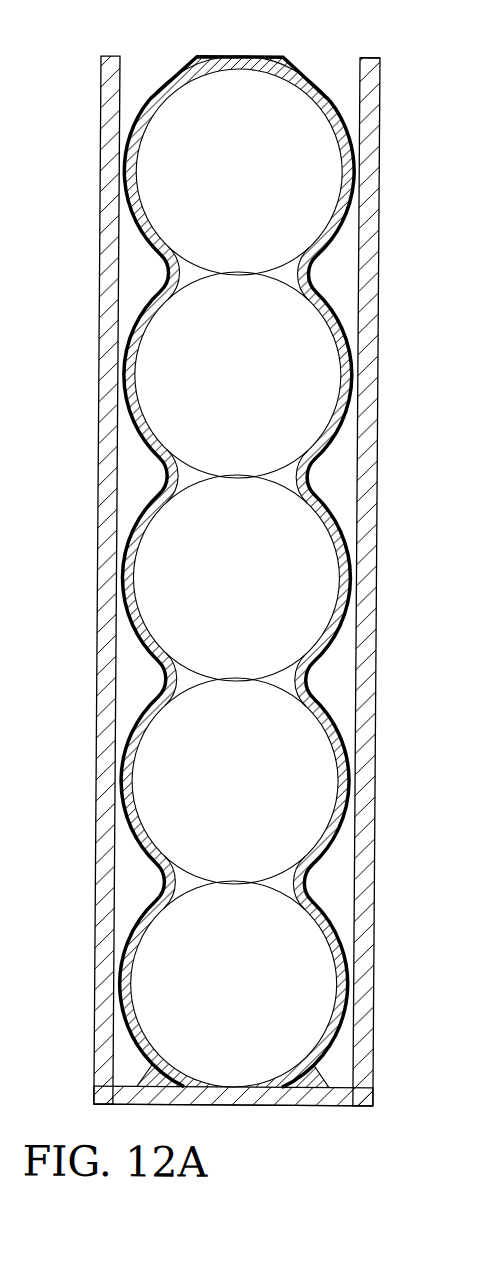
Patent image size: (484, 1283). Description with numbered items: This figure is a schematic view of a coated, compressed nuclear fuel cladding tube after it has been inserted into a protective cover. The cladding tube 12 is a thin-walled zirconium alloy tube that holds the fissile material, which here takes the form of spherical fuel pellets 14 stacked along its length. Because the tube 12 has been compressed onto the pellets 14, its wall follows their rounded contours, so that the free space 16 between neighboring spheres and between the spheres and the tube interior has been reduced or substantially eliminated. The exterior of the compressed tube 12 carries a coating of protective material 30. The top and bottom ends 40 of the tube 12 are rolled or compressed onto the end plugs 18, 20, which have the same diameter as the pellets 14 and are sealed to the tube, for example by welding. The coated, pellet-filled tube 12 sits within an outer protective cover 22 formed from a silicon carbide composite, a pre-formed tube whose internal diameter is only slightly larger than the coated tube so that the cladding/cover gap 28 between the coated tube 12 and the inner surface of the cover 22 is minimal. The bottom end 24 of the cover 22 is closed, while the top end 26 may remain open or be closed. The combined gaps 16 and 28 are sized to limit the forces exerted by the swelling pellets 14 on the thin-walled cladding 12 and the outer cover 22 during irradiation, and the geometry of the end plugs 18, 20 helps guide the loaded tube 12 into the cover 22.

The cladding tube 12 is at (337, 708).
The fuel pellets 14 is at (318, 787).
The free space 16 is at (198, 275).
The end plug 18 is at (253, 1092).
The end plug 20 is at (242, 57).
The protective cover 22 is at (372, 320).
The bottom end of cover 24 is at (300, 1100).
The top end of cover 26 is at (367, 57).
The cladding/cover gap 28 is at (330, 268).
The protective material 30 is at (135, 422).
The top and bottom ends 40 is at (148, 92).